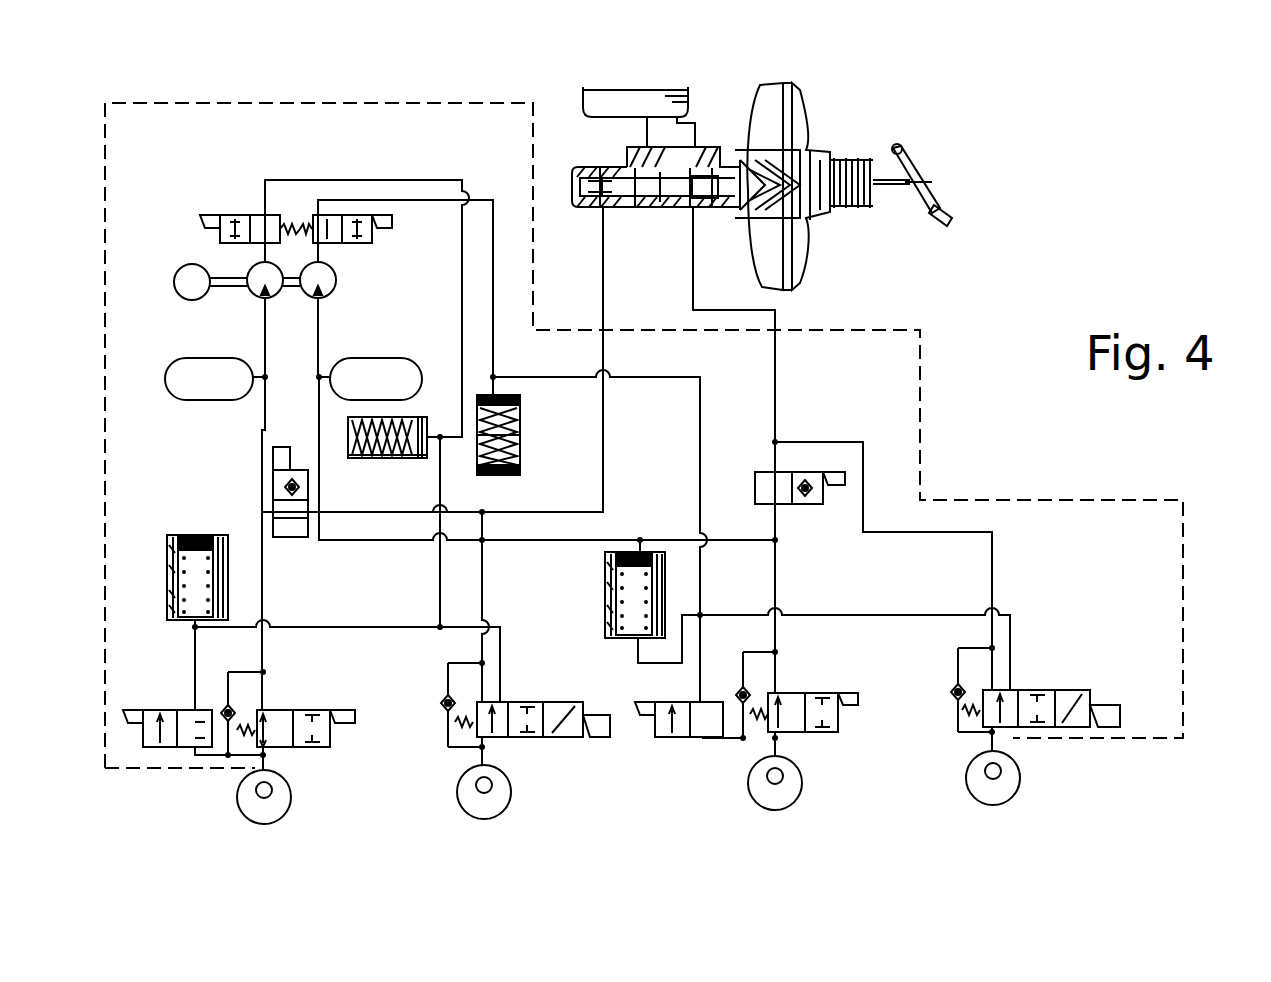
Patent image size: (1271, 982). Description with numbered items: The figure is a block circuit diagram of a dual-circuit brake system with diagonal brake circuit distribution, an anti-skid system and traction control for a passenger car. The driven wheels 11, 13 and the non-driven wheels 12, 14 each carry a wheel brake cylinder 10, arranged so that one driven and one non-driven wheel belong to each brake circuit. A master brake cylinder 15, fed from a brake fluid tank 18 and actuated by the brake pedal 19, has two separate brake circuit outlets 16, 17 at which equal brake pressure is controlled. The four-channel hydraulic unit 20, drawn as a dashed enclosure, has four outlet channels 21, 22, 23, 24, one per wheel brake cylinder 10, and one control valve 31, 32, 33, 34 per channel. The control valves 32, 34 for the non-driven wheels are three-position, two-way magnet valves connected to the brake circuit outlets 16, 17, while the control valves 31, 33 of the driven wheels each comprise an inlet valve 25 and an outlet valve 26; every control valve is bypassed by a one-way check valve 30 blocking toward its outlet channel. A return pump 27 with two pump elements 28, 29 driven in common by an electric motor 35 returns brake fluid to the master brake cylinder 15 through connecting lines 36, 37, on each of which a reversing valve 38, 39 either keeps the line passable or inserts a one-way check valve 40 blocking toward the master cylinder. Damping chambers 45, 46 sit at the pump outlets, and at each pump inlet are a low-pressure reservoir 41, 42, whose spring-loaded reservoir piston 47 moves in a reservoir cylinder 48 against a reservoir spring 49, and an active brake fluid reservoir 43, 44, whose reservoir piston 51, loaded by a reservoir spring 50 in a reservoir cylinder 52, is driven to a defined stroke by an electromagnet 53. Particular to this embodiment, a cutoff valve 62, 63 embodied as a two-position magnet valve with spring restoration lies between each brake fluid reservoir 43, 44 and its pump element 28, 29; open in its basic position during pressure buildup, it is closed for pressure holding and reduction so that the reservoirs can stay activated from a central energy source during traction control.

The wheel brake cylinder 10 is at (275, 790).
The driven wheel 11 is at (283, 815).
The non-driven wheel 12 is at (497, 805).
The driven wheel 13 is at (795, 800).
The non-driven wheel 14 is at (1010, 795).
The master brake cylinder 15 is at (665, 207).
The brake circuit outlet 16 is at (600, 207).
The brake circuit outlet 17 is at (695, 207).
The brake fluid tank 18 is at (625, 100).
The brake pedal 19 is at (930, 198).
The four-channel hydraulic unit 20 is at (925, 395).
The outlet channel 21 is at (258, 765).
The outlet channel 22 is at (480, 748).
The outlet channel 23 is at (780, 742).
The outlet channel 24 is at (990, 740).
The inlet valve 25 is at (318, 712).
The outlet valve 26 is at (172, 712).
The return pump 27 is at (212, 272).
The pump element 28 is at (254, 296).
The pump element 29 is at (330, 296).
The one-way check valve 30 is at (224, 705).
The control valve 31 is at (278, 705).
The control valve 32 is at (525, 702).
The control valve 33 is at (786, 690).
The control valve 34 is at (1040, 686).
The electric motor 35 is at (180, 298).
The connecting line 36 is at (605, 482).
The connecting line 37 is at (772, 392).
The reversing valve 38 is at (272, 487).
The reversing valve 39 is at (780, 497).
The one-way check valve 40 is at (291, 478).
The low-pressure reservoir 41 is at (383, 460).
The low-pressure reservoir 42 is at (522, 443).
The brake fluid reservoir 43 is at (166, 582).
The brake fluid reservoir 44 is at (604, 600).
The damping chamber 45 is at (209, 379).
The damping chamber 46 is at (376, 379).
The reservoir piston 47 is at (420, 417).
The reservoir cylinder 48 is at (408, 460).
The reservoir spring 49 is at (352, 460).
The reservoir spring 50 is at (218, 606).
The reservoir piston 51 is at (196, 540).
The reservoir cylinder 52 is at (216, 578).
The electromagnet 53 is at (172, 565).
The cutoff valve 62 is at (245, 213).
The cutoff valve 63 is at (330, 213).